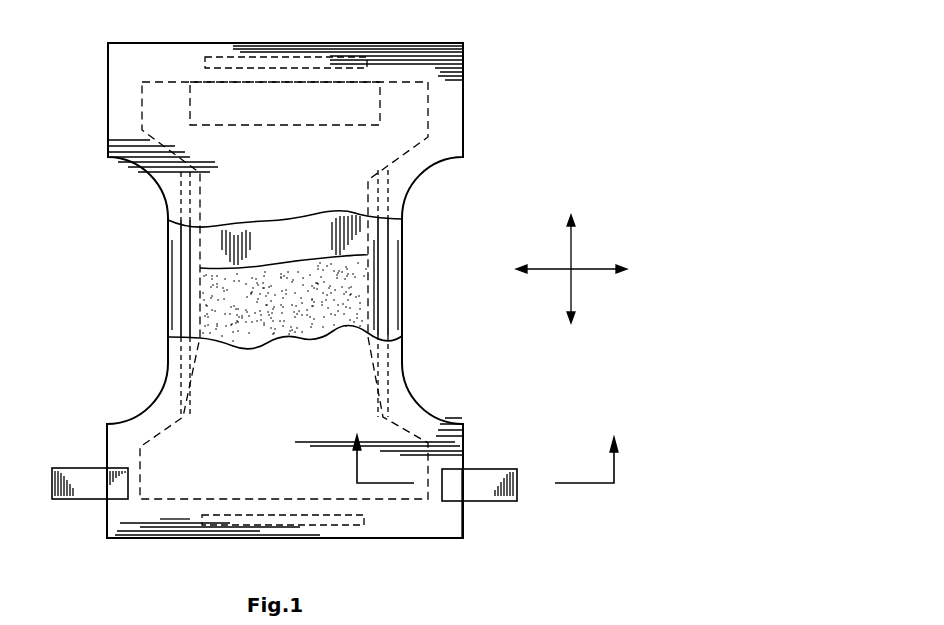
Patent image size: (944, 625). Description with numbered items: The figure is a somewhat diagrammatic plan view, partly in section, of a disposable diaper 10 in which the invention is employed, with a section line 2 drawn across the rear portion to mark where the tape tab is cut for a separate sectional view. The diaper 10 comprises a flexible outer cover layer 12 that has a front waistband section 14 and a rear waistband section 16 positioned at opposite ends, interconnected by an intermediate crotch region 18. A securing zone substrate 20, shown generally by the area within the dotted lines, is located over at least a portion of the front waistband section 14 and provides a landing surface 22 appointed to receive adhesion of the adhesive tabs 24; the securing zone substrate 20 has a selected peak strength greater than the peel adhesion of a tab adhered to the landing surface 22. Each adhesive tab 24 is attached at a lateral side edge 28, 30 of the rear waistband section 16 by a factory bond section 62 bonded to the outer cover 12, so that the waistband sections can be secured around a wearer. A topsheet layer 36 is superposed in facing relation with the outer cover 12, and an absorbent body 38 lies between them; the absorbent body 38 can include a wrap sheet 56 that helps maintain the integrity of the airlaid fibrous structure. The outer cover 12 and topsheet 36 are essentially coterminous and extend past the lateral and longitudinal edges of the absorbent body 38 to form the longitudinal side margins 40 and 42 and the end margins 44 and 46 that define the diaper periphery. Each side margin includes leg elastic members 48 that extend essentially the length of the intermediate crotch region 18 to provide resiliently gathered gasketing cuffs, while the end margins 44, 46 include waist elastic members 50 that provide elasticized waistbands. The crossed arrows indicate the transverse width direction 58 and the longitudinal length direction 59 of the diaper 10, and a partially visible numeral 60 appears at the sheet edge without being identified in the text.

The disposable absorbent article (diaper) 10 is at (515, 77).
The outer cover 12 is at (207, 155).
The front waist region 14 is at (175, 53).
The rear waist region 16 is at (400, 527).
The crotch region side edge 18 is at (168, 246).
The bodyside liner 20 is at (383, 100).
The absorbent structure 22 is at (300, 108).
The fastening tabs 24 is at (80, 500).
The side edge 28 is at (105, 511).
The side edge 30 is at (463, 513).
The containment flap 36 is at (376, 260).
The absorbent pad 38 is at (352, 298).
The leg elastic region 40 is at (172, 299).
The flap edge 42 is at (397, 327).
The waist elastic 44 is at (177, 515).
The waist elastic 46 is at (425, 62).
The leg elastics 48 is at (388, 240).
The waist elastic members 50 is at (300, 57).
The surge management layer 56 is at (268, 256).
The longitudinal direction 58 is at (590, 268).
The lateral direction 59 is at (574, 282).
The elastomeric member 60 is at (107, 622).
The tab attachment edge 62 is at (107, 467).
The section line 2- 2 is at (488, 448).